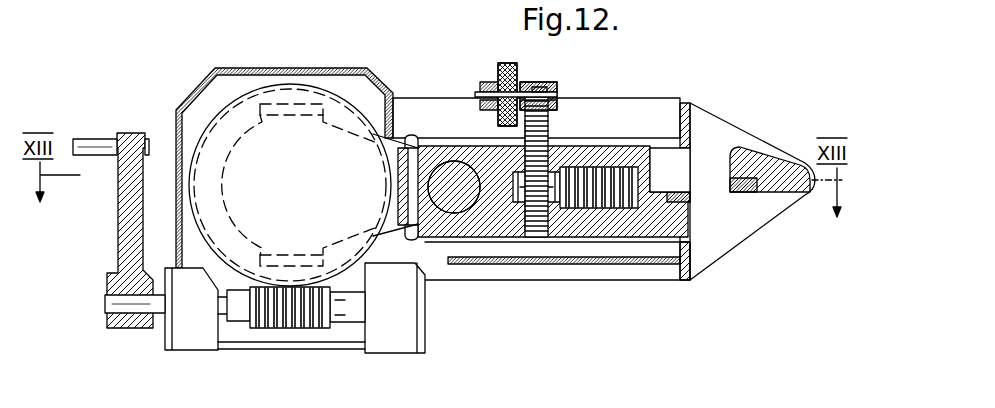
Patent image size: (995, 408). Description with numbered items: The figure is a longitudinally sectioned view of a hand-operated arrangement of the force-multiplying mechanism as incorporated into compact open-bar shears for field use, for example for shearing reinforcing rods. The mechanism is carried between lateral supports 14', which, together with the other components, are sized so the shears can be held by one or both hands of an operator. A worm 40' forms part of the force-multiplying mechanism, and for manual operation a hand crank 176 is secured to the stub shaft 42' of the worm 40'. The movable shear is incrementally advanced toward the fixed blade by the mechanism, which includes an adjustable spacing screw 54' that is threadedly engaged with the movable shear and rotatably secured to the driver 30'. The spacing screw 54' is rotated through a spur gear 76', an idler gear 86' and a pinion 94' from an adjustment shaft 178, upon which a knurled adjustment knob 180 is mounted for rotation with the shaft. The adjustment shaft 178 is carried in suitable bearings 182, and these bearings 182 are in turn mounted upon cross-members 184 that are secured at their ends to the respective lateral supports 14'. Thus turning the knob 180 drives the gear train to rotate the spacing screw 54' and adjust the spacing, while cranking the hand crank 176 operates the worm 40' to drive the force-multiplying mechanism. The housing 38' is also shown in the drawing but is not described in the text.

The lateral supports 14' is at (594, 169).
The driver 30' is at (464, 239).
The socket housing 38' is at (284, 157).
The worm 40' is at (291, 342).
The stub shaft 42' is at (106, 312).
The adjustable spacing screw 54' is at (579, 242).
The spur gear 76' is at (571, 159).
The idler gear 86' is at (573, 164).
The pinion 94' is at (563, 64).
The hand crank 176 is at (117, 203).
The adjustment shaft 178 is at (480, 94).
The knurled adjustment knob 180 is at (507, 63).
The bearings 182 is at (480, 106).
The cross-members 184 is at (487, 82).